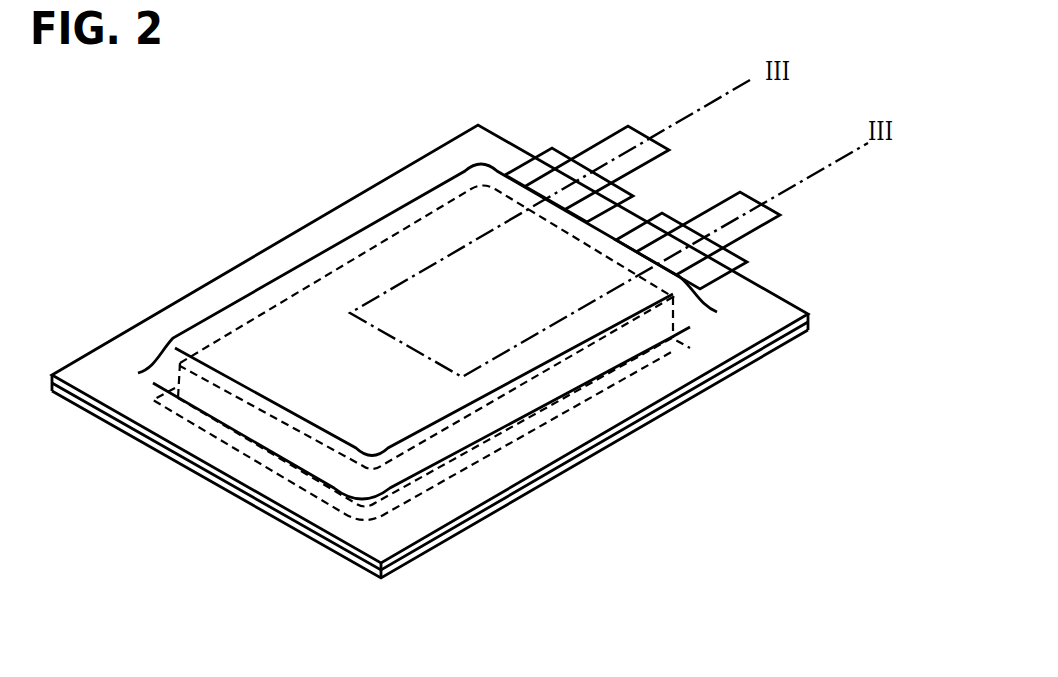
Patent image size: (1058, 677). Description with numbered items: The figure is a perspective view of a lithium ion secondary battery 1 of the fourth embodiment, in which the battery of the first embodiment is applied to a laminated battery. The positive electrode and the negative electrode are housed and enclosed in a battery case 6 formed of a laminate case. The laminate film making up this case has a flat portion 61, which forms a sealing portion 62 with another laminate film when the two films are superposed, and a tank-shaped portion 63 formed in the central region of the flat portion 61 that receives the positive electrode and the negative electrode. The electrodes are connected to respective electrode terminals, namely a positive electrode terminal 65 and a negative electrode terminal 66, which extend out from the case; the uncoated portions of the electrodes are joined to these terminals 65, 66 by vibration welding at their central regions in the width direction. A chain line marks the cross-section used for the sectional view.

The lithium ion secondary battery 1 is at (222, 188).
The battery case 6 is at (427, 302).
The tank-shaped portion 63 is at (367, 273).
The flat portion 61 is at (466, 351).
The sealing portion 62 is at (677, 380).
The positive electrode terminal 65 is at (592, 155).
The negative electrode terminal 66 is at (748, 217).